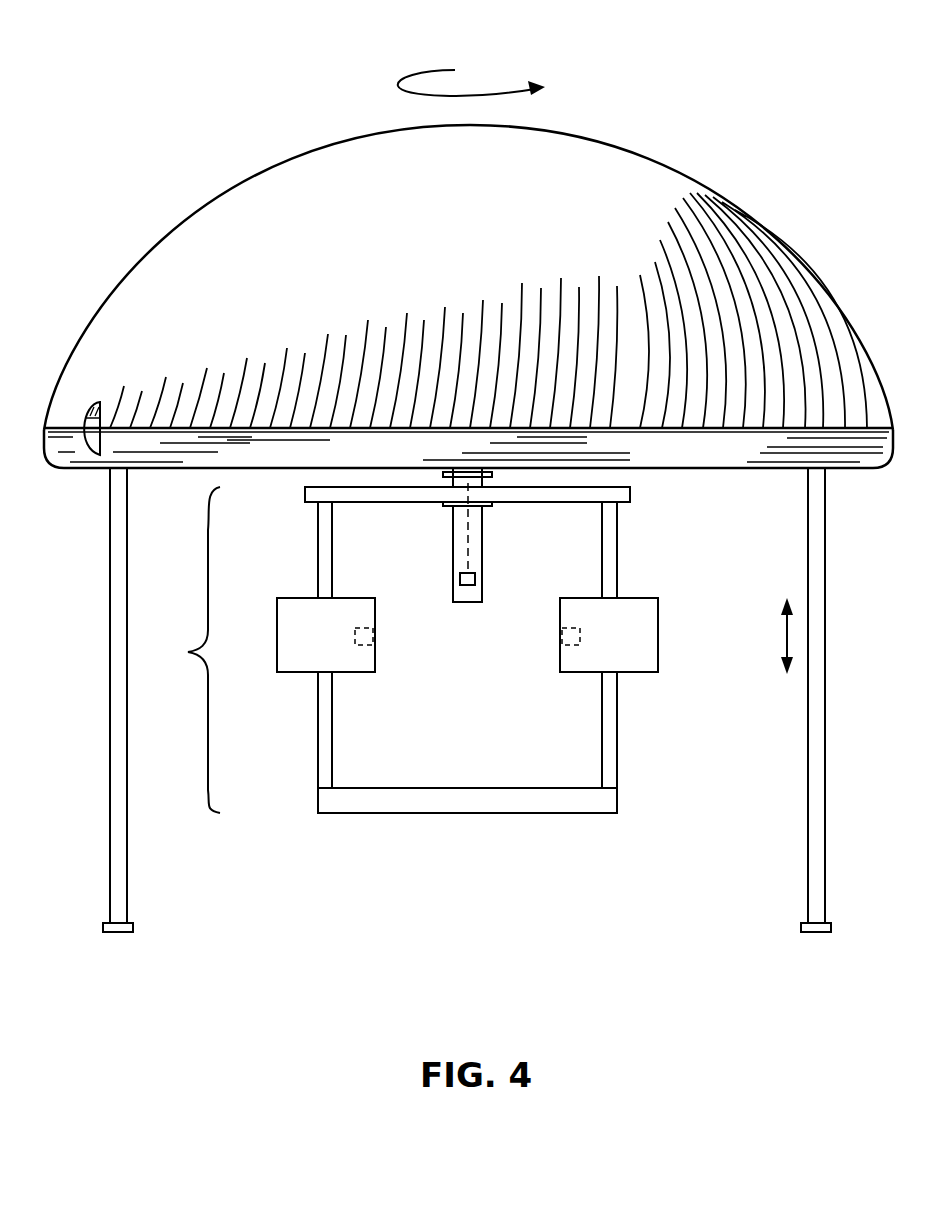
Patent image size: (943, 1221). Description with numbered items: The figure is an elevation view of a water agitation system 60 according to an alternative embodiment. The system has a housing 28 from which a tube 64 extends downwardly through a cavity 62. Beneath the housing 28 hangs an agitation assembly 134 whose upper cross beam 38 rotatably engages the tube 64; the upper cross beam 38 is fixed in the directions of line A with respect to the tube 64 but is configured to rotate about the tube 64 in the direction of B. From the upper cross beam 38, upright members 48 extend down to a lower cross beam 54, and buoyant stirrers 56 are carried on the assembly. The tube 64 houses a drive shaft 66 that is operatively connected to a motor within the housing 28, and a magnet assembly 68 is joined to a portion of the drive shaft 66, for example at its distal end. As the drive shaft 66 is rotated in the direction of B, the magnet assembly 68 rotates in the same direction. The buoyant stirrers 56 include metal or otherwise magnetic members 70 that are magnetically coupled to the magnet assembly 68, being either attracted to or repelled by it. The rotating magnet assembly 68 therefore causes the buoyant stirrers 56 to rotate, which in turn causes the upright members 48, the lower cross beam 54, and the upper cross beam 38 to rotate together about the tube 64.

The water agitation system 60 is at (134, 54).
The housing 28 is at (262, 172).
The upper cross beam 38 is at (618, 493).
The upright members 48 is at (317, 745).
The lower cross beam 54 is at (453, 815).
The buoyant stirrers 56 is at (290, 622).
The cavity 62 is at (452, 480).
The tube 64 is at (483, 516).
The drive shaft 66 is at (470, 547).
The magnet assembly 68 is at (478, 580).
The magnetic members 70 is at (375, 637).
The agitation assembly 134 is at (176, 650).
The line A is at (780, 640).
The direction B is at (462, 68).